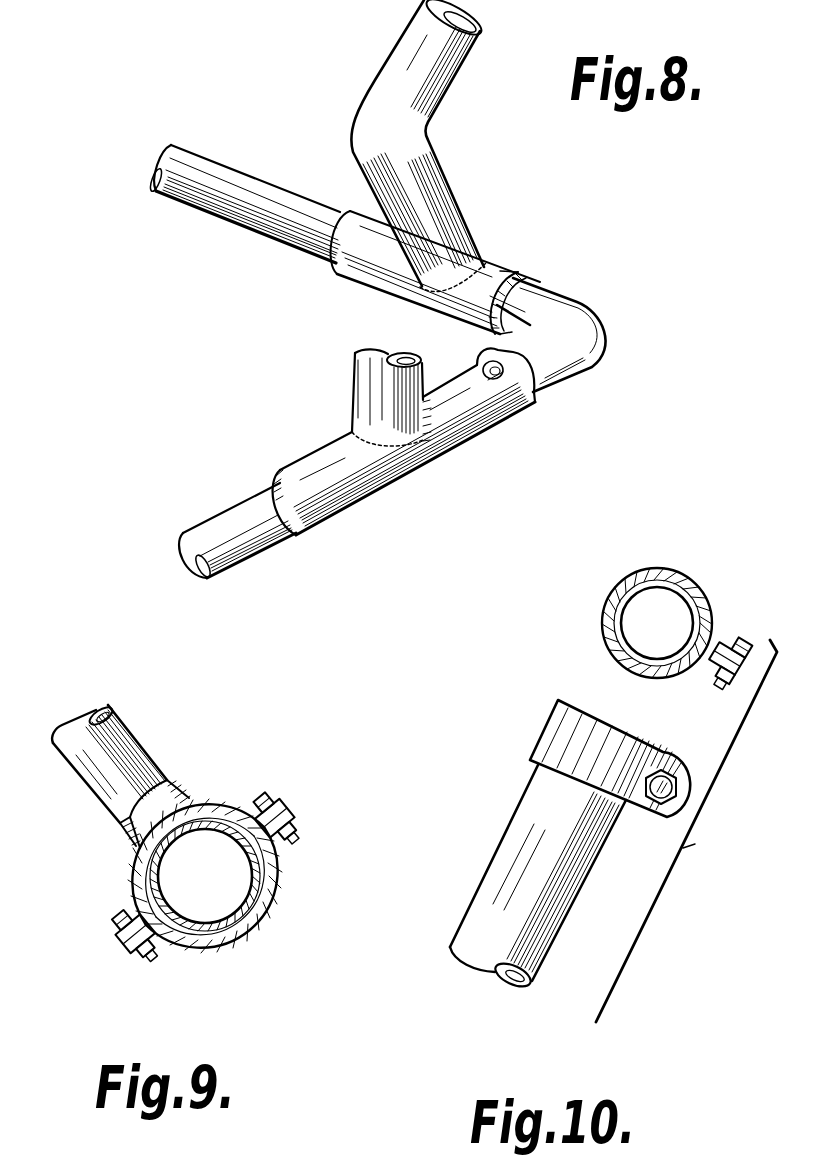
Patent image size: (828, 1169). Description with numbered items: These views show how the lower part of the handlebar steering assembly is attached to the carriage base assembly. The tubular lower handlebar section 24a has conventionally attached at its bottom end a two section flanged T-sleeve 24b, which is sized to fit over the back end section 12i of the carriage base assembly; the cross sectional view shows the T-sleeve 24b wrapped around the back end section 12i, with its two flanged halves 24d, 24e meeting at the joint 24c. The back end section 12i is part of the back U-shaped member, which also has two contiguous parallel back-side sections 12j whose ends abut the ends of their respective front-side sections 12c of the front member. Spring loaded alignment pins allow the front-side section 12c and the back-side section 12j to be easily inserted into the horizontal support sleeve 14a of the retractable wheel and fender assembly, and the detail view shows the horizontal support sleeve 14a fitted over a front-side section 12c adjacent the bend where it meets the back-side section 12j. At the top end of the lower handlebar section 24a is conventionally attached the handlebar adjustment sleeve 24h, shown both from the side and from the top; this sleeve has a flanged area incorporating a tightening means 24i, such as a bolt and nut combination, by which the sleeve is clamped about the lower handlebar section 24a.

In FIG. 8, the back-end section 12i is at (289, 249).
In FIG. 9, the back-end section 12i is at (167, 887).
In FIG. 8, the back-side section 12j is at (576, 374).
In FIG. 8, the front-side section 12c is at (272, 546).
In FIG. 8, the horizontal support sleeve 14a is at (467, 444).
In FIG. 8, the lower handlebar section 24a is at (425, 163).
In FIG. 9, the lower handlebar section 24a is at (125, 723).
In FIG. 10, the lower handlebar section 24a is at (612, 606).
In FIG. 8, the flanged T-sleeve 24b is at (487, 250).
In FIG. 9, the flanged T-sleeve 24b is at (126, 858).
In FIG. 8, the clamp joint 24c is at (506, 273).
In FIG. 8, the clamp half ring 24d is at (494, 265).
In FIG. 9, the clamp half ring 24d is at (202, 804).
In FIG. 9, the clamp half ring 24e is at (263, 913).
In FIG. 10, the handlebar adjustment sleeve 24h is at (684, 569).
In FIG. 10, the tightening means 24i is at (723, 640).